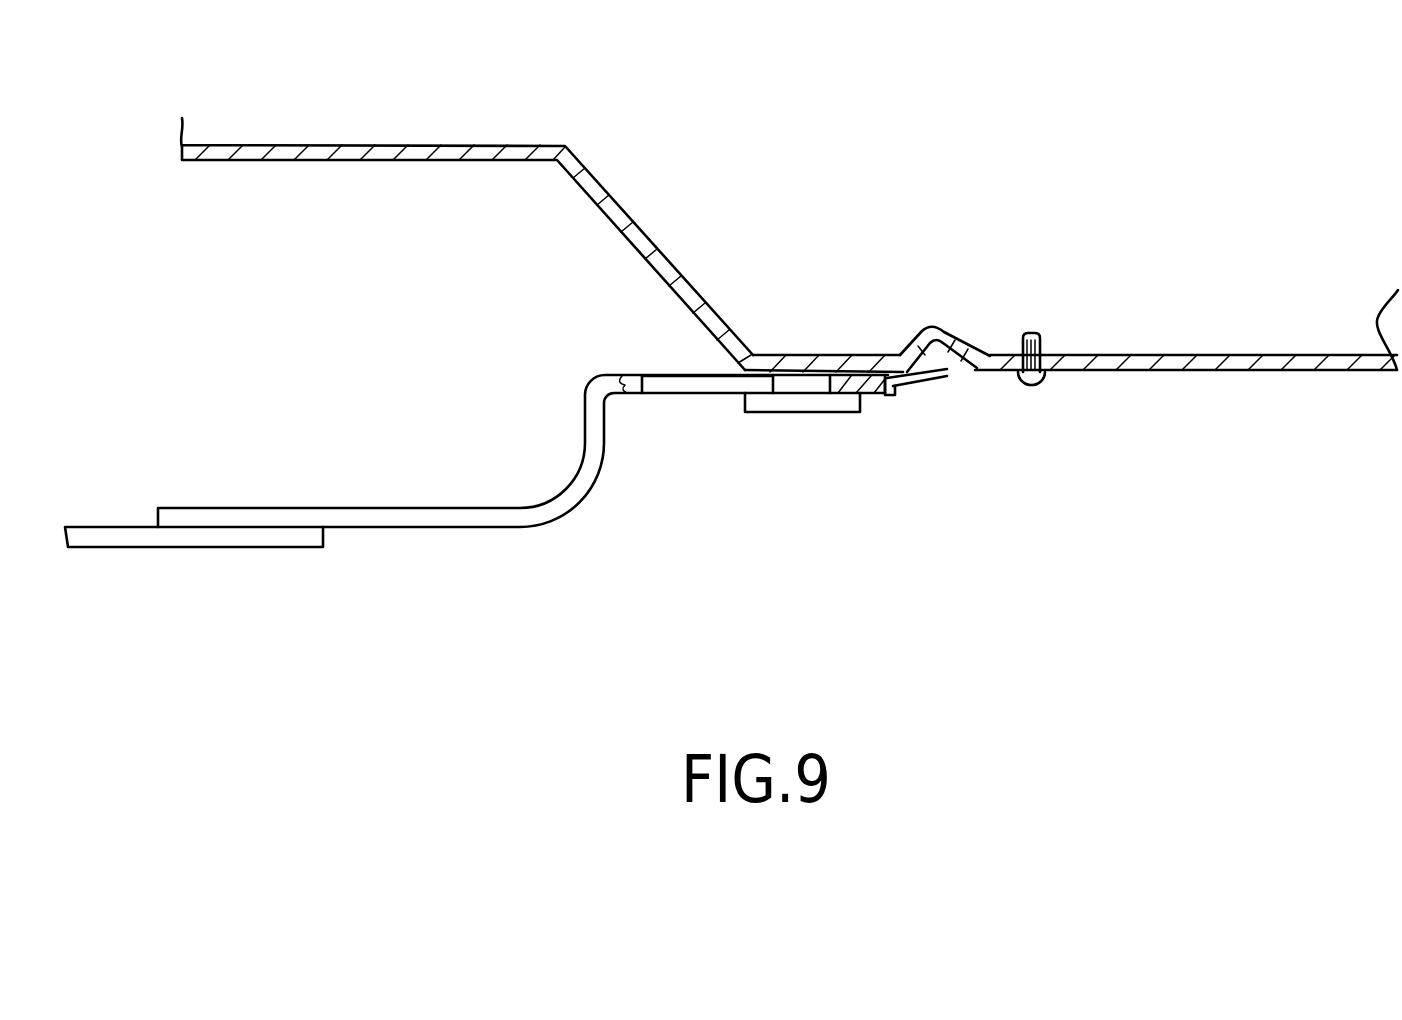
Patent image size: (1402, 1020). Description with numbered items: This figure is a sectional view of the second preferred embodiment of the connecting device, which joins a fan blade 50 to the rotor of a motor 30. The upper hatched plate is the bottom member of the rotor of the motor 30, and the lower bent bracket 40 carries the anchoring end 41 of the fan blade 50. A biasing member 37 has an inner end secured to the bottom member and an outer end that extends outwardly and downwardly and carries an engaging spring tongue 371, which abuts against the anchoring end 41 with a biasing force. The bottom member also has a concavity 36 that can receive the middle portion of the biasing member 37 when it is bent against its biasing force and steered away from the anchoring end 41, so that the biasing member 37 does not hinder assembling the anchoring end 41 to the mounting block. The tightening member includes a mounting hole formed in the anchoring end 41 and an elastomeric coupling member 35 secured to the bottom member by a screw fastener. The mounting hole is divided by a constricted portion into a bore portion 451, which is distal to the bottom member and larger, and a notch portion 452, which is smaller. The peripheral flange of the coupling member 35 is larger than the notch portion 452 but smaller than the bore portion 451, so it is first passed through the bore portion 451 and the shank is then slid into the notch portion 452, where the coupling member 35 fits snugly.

The motor 30 is at (398, 158).
The elastomeric coupling member 35 is at (800, 372).
The concavity 36 is at (917, 340).
The biasing member 37 is at (947, 378).
The engaging spring tongue 371 is at (893, 397).
The bracket 40 is at (457, 526).
The anchoring end 41 is at (870, 395).
The bore portion 451 is at (672, 388).
The notch portion 452 is at (840, 398).
The fan blade 50 is at (248, 545).